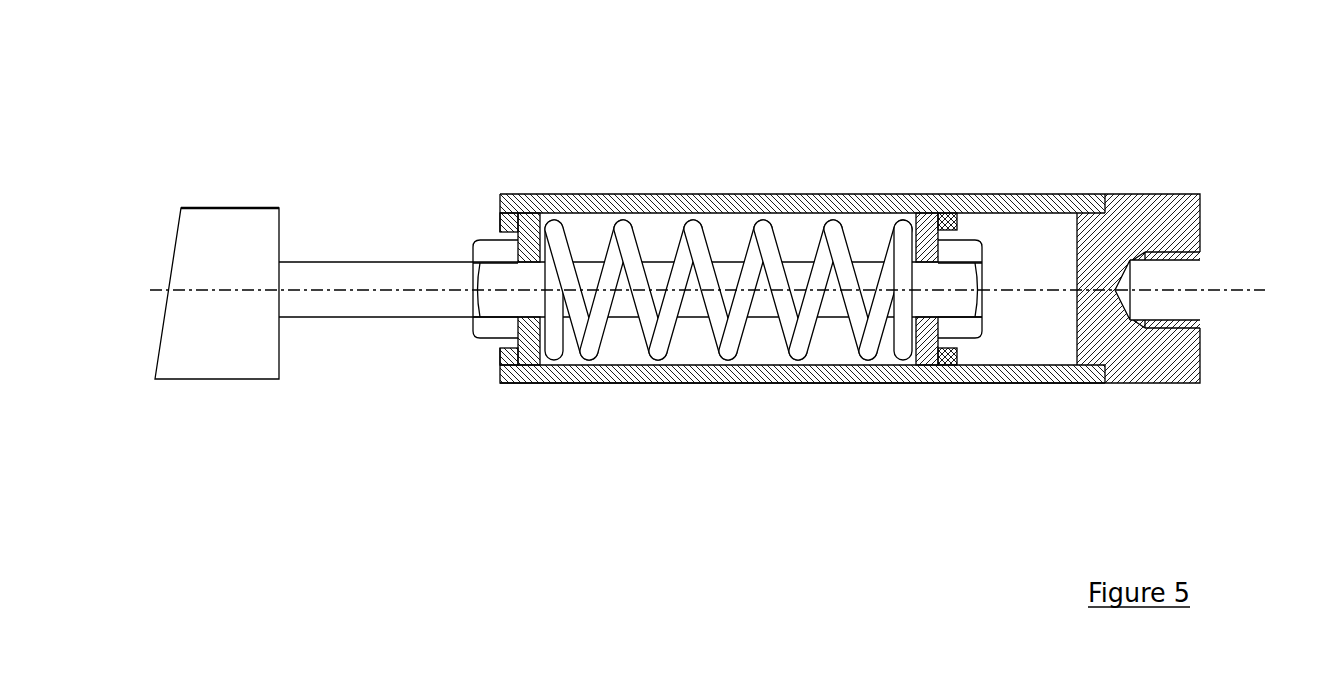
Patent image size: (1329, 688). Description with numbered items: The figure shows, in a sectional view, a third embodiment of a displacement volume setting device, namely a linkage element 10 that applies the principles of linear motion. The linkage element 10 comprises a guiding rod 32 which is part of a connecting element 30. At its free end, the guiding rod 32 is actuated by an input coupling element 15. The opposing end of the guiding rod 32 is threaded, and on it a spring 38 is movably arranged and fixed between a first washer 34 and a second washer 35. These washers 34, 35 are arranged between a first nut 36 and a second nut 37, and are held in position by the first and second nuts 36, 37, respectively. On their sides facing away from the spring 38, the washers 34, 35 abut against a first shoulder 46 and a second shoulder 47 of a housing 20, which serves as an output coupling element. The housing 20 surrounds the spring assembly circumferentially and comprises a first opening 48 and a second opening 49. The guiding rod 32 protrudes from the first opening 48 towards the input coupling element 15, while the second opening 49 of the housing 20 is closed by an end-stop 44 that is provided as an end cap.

The linkage element 10 is at (716, 258).
The input coupling element 15 is at (247, 342).
The housing 20 is at (987, 372).
The connecting element 30 is at (630, 304).
The guiding rod 32 is at (357, 277).
The first washer 34 is at (924, 245).
The second washer 35 is at (530, 235).
The first nut 36 is at (957, 248).
The second nut 37 is at (488, 252).
The spring 38 is at (695, 230).
The end-stop 44 is at (1177, 339).
The first shoulder 46 is at (942, 358).
The second shoulder 47 is at (513, 380).
The first opening 48 is at (508, 343).
The second opening 49 is at (1071, 335).